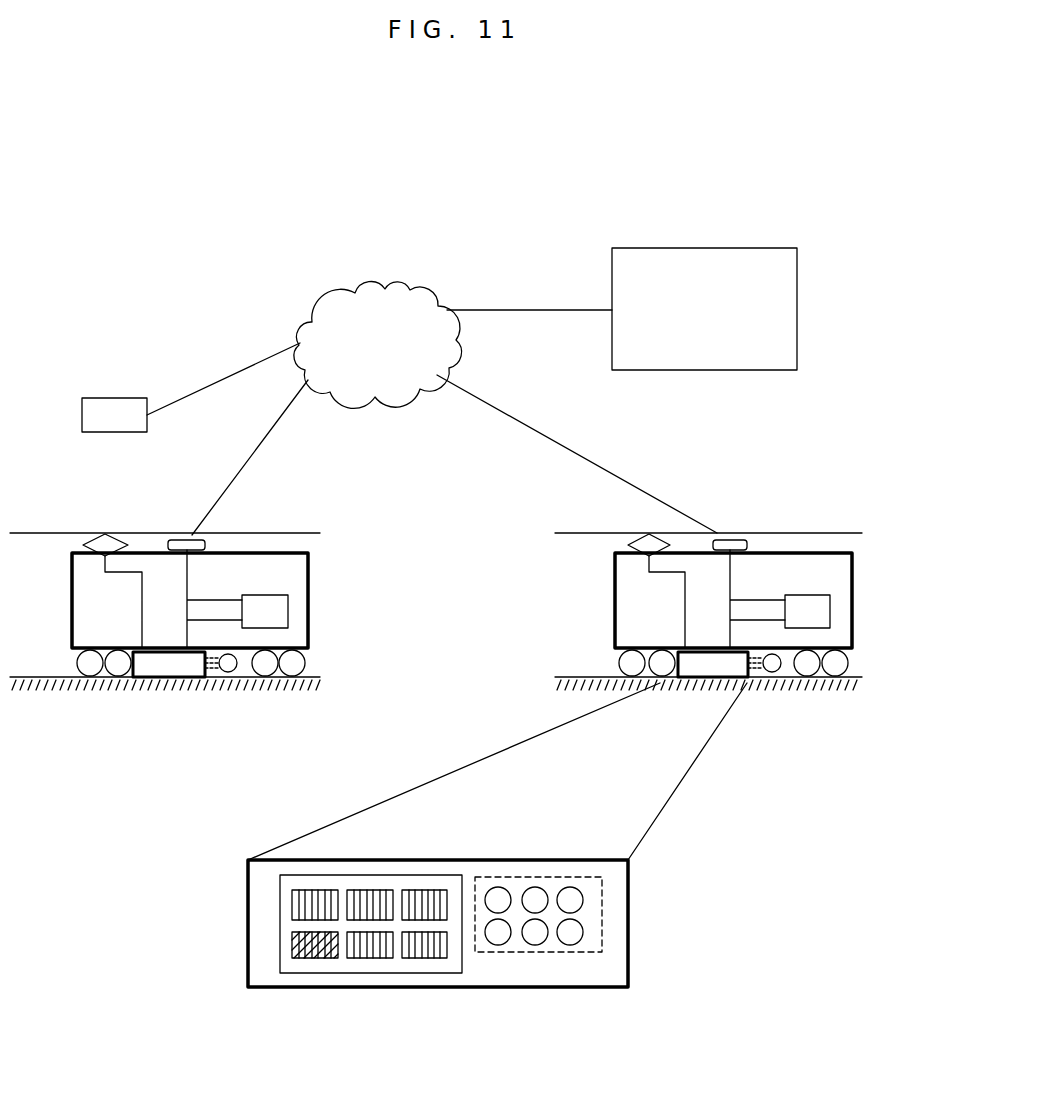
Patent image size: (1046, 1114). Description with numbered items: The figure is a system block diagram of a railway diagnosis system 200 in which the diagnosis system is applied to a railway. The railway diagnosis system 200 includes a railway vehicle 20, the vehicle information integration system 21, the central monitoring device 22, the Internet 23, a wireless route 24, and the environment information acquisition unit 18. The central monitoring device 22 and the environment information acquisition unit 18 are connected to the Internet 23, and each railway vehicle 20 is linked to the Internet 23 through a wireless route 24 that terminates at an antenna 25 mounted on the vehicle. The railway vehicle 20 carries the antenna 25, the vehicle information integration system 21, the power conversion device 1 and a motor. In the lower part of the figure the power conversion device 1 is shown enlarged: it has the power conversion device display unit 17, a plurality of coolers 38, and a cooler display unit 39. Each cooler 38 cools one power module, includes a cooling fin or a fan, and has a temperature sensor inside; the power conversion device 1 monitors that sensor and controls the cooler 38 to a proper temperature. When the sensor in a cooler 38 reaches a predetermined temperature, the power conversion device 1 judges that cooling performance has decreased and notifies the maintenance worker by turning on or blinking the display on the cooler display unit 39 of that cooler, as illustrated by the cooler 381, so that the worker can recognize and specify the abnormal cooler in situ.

The railway diagnosis system 200 is at (572, 201).
The central monitoring device 22 is at (757, 248).
The Internet 23 is at (356, 290).
The environment information acquisition unit 18 is at (112, 398).
The wireless route 24 is at (268, 435).
The antenna 25 is at (175, 540).
The railway vehicle 20 is at (294, 581).
The vehicle information integration system 21 is at (280, 608).
The power conversion device 1 is at (165, 667).
The cooler 38 is at (328, 890).
The cooler 381 is at (315, 958).
The cooler display unit 39 is at (370, 973).
The power conversion device display unit 17 is at (535, 877).